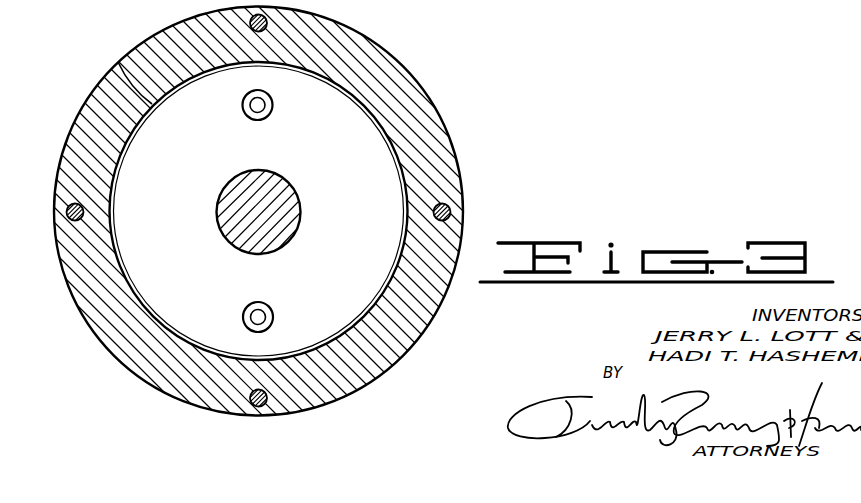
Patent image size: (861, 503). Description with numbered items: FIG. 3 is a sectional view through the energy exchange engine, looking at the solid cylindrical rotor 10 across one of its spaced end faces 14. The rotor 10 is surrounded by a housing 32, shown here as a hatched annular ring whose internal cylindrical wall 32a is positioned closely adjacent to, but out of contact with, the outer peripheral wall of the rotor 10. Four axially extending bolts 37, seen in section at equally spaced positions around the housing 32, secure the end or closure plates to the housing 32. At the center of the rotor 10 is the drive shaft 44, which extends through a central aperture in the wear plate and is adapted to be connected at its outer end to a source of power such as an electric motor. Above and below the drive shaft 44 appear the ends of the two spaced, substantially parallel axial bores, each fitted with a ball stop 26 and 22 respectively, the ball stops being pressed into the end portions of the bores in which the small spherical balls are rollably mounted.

The rotor 10 is at (358, 148).
The end face 14 is at (200, 171).
The ball stop 22 is at (272, 311).
The ball stop 26 is at (273, 104).
The housing 32 is at (390, 77).
The internal cylindrical wall 32a is at (118, 62).
The bolts 37 is at (257, 32).
The drive shaft 44 is at (291, 212).